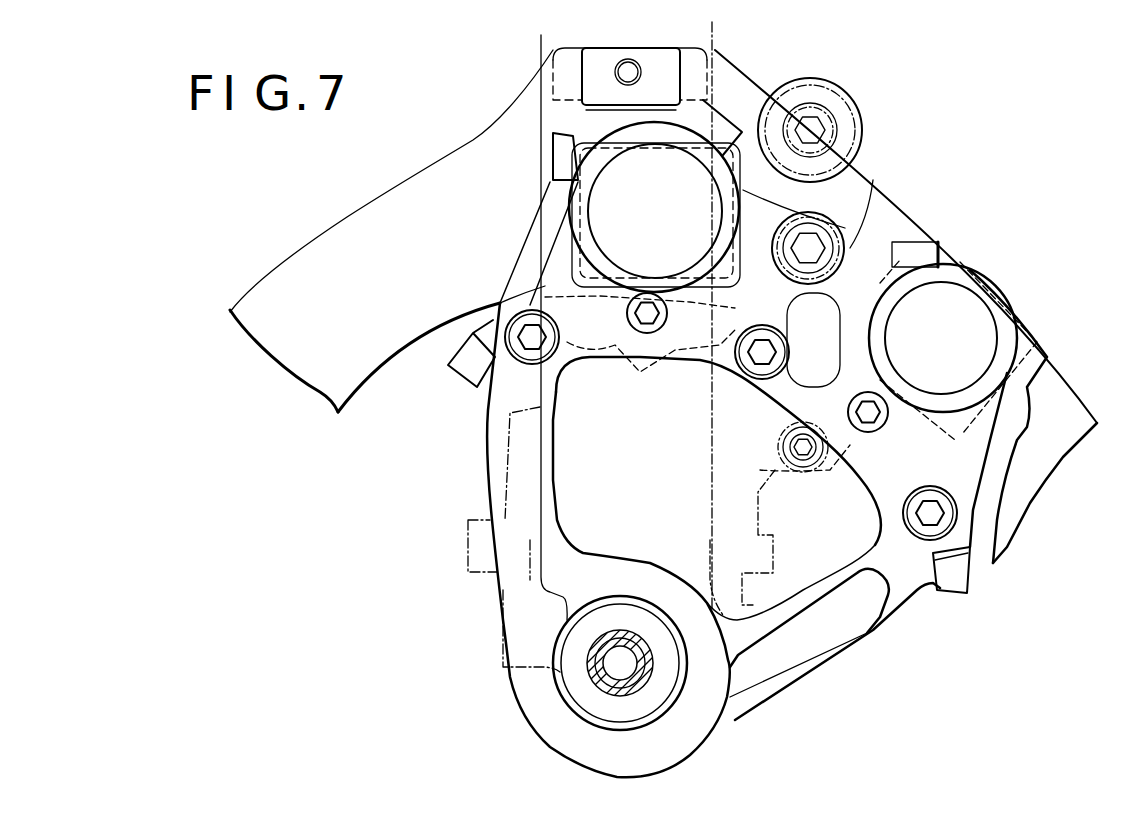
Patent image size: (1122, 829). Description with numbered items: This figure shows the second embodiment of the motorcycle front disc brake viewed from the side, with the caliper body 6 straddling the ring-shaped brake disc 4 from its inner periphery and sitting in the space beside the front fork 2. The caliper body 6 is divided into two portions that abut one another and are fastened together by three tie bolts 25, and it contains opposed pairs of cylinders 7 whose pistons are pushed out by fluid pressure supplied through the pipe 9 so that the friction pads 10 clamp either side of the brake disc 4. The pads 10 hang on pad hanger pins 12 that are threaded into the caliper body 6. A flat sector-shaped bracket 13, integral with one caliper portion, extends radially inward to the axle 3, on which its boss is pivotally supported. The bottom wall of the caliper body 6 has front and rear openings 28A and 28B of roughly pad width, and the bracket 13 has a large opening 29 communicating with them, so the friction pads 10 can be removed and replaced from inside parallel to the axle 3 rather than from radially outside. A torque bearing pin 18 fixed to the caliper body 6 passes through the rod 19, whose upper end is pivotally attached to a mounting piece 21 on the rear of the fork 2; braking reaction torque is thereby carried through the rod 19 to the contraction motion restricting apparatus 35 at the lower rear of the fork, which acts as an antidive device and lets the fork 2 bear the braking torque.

The front fork 2 is at (533, 533).
The axle 3 is at (630, 645).
The brake disc 4 is at (1088, 392).
The caliper body 6 is at (1002, 440).
The cylinder 7 is at (625, 160).
The pipe 9 is at (960, 577).
The friction pad 10 is at (575, 140).
The pad hanger pin 12 is at (645, 295).
The bracket 13 is at (893, 592).
The torque bearing pin 18 is at (825, 235).
The rod 19 is at (875, 222).
The mounting piece 21 is at (795, 60).
The tie bolt 25 is at (545, 360).
The front opening 28A is at (640, 349).
The rear opening 28B is at (816, 468).
The opening 29 is at (563, 475).
The contraction motion restricting apparatus 35 is at (780, 497).